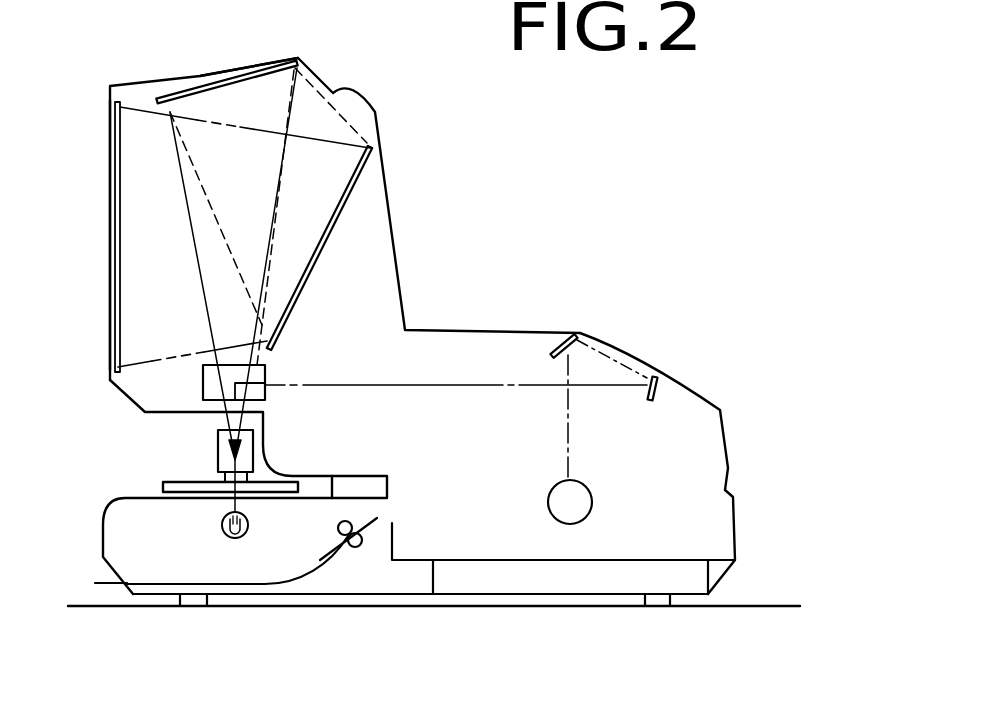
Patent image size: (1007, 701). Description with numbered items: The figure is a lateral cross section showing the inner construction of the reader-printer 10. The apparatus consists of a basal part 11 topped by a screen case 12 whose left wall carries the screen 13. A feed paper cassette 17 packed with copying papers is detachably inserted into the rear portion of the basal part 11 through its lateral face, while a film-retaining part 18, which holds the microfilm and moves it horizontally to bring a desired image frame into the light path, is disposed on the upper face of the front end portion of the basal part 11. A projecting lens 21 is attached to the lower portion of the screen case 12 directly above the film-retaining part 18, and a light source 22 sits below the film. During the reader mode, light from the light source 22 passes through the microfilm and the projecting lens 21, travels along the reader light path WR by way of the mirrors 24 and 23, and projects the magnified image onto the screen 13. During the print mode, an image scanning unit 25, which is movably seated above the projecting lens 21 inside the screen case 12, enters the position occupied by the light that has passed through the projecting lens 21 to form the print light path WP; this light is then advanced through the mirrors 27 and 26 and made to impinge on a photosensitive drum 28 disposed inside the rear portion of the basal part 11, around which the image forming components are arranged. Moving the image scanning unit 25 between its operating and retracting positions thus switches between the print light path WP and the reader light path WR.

The reader-printer 10 is at (492, 320).
The basal part 11 is at (410, 594).
The screen case 12 is at (373, 97).
The screen 13 is at (108, 247).
The feed paper cassette 17 is at (580, 583).
The film-retaining part 18 is at (170, 482).
The projecting lens 21 is at (245, 448).
The light source 22 is at (222, 525).
The mirror 23 is at (231, 82).
The mirror 24 is at (345, 213).
The image scanning unit 25 is at (279, 370).
The mirror 26 is at (660, 390).
The mirror 27 is at (580, 335).
The photosensitive drum 28 is at (580, 500).
The reader light path WR is at (260, 223).
The print light path WP is at (443, 388).